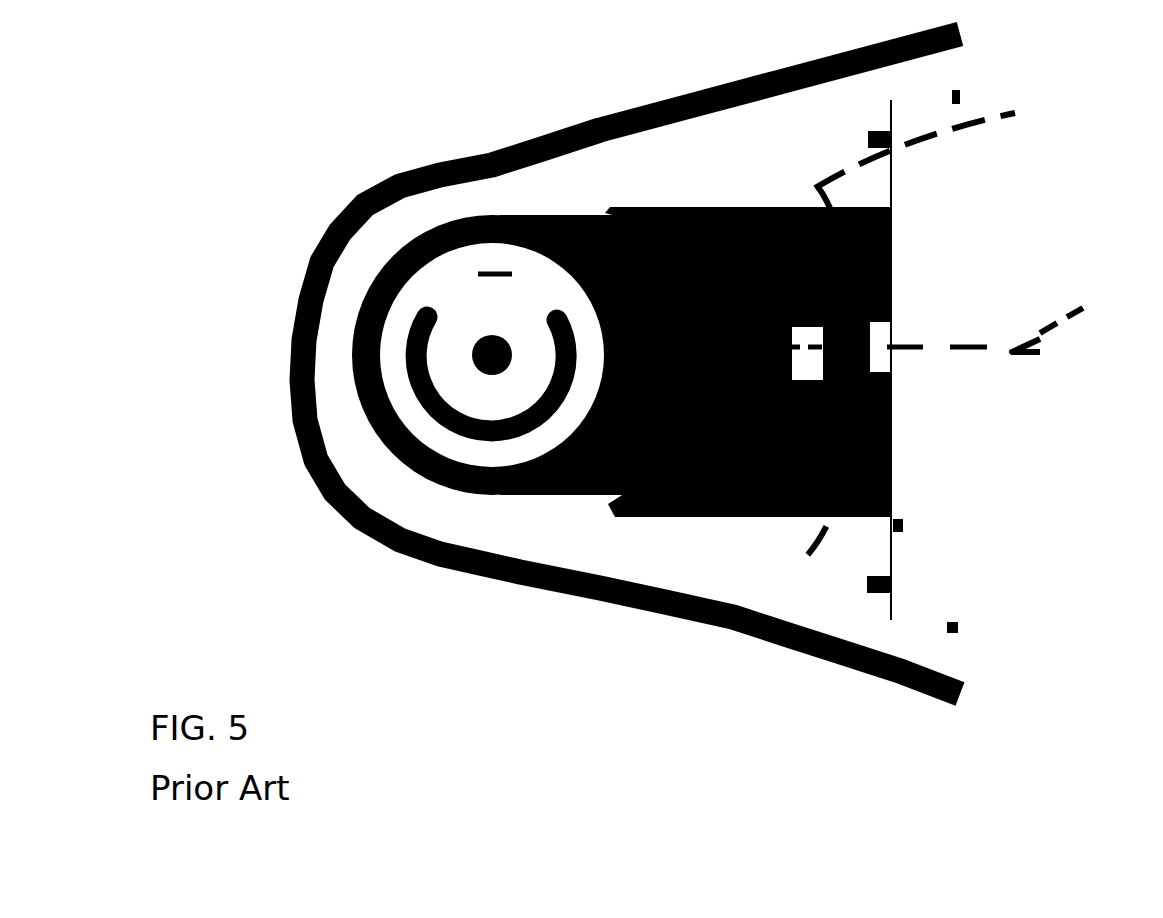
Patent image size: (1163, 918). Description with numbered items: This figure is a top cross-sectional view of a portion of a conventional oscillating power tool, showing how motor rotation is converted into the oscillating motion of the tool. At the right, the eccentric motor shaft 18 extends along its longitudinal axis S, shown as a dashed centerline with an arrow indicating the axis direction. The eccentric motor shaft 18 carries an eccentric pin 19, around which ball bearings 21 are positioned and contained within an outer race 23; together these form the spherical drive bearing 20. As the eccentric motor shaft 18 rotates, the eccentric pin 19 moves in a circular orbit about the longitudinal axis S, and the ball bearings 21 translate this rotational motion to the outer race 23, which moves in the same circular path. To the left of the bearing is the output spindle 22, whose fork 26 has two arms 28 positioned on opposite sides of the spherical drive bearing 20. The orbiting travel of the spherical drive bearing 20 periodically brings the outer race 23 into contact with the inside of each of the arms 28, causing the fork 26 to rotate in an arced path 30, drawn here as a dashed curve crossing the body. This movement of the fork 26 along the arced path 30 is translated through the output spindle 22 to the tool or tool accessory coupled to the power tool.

The eccentric motor shaft 18 is at (943, 337).
The eccentric pin 19 is at (875, 380).
The spherical drive bearing 20 is at (855, 280).
The ball bearings 21 is at (855, 285).
The output spindle 22 is at (485, 452).
The outer race 23 is at (867, 430).
The fork 26 is at (678, 468).
The arms 28 is at (895, 218).
The arced path 30 is at (934, 328).
The longitudinal axis S is at (1061, 323).